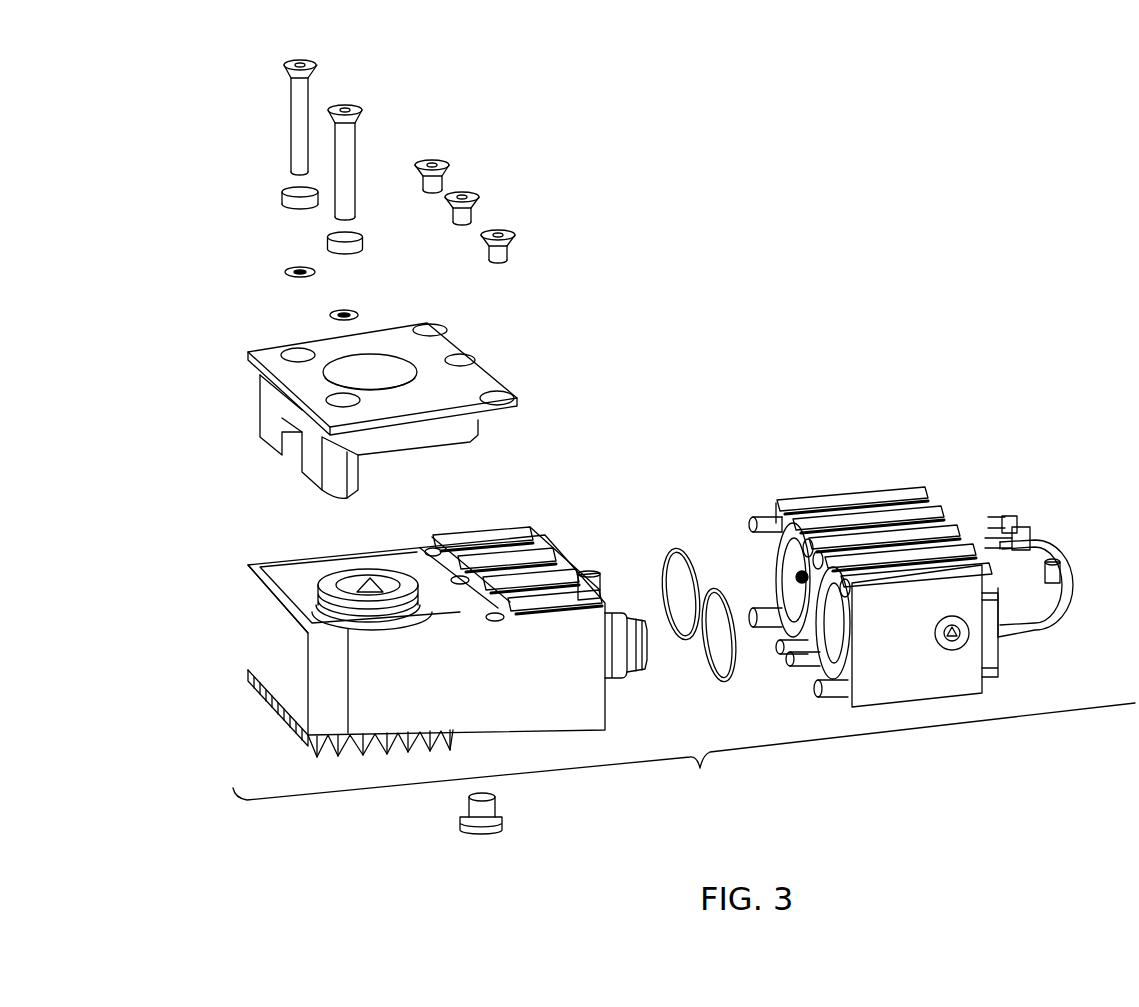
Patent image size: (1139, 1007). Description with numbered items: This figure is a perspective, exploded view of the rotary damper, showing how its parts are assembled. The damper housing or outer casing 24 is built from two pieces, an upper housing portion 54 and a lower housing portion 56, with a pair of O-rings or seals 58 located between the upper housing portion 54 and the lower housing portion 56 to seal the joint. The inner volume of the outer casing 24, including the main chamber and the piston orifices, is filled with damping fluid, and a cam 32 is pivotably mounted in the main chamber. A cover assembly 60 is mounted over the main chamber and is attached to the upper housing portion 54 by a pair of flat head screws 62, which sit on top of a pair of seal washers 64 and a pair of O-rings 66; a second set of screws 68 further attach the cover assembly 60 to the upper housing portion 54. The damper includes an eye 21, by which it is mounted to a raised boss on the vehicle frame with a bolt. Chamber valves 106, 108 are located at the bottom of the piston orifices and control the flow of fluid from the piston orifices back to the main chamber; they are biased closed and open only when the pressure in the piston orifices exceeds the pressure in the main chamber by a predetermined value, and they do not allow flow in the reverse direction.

The eye 21 is at (1076, 584).
The outer casing 24 is at (684, 752).
The cam 32 is at (312, 598).
The upper housing portion 54 is at (258, 614).
The lower housing portion 56 is at (853, 497).
The O-rings 58 is at (675, 548).
The cover assembly 60 is at (495, 378).
The flat head screws 62 is at (290, 98).
The seal washers 64 is at (282, 196).
The O-rings 66 is at (285, 272).
The screws 68 is at (448, 163).
The chamber valve 106 is at (588, 570).
The chamber valve 108 is at (616, 682).